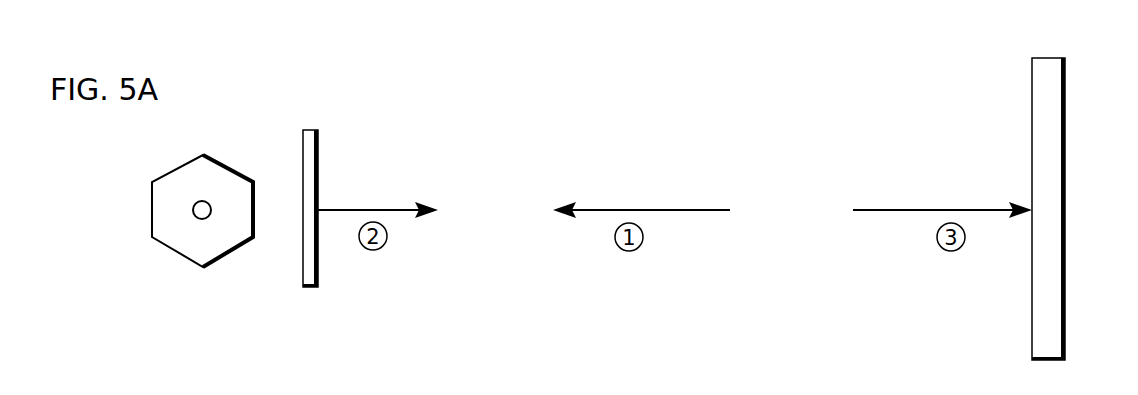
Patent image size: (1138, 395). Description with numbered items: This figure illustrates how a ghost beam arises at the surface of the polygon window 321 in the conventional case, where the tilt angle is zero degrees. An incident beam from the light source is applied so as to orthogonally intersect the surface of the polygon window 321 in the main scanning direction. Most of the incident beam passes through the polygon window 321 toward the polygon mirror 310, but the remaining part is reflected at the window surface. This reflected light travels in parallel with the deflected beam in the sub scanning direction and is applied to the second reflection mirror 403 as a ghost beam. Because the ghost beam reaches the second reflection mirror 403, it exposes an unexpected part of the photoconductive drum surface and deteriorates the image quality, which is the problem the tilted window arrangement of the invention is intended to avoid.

The hexagonal nut / fastener 310 is at (205, 170).
The polygon window 321 is at (310, 133).
The second reflection mirror 403 is at (1048, 58).